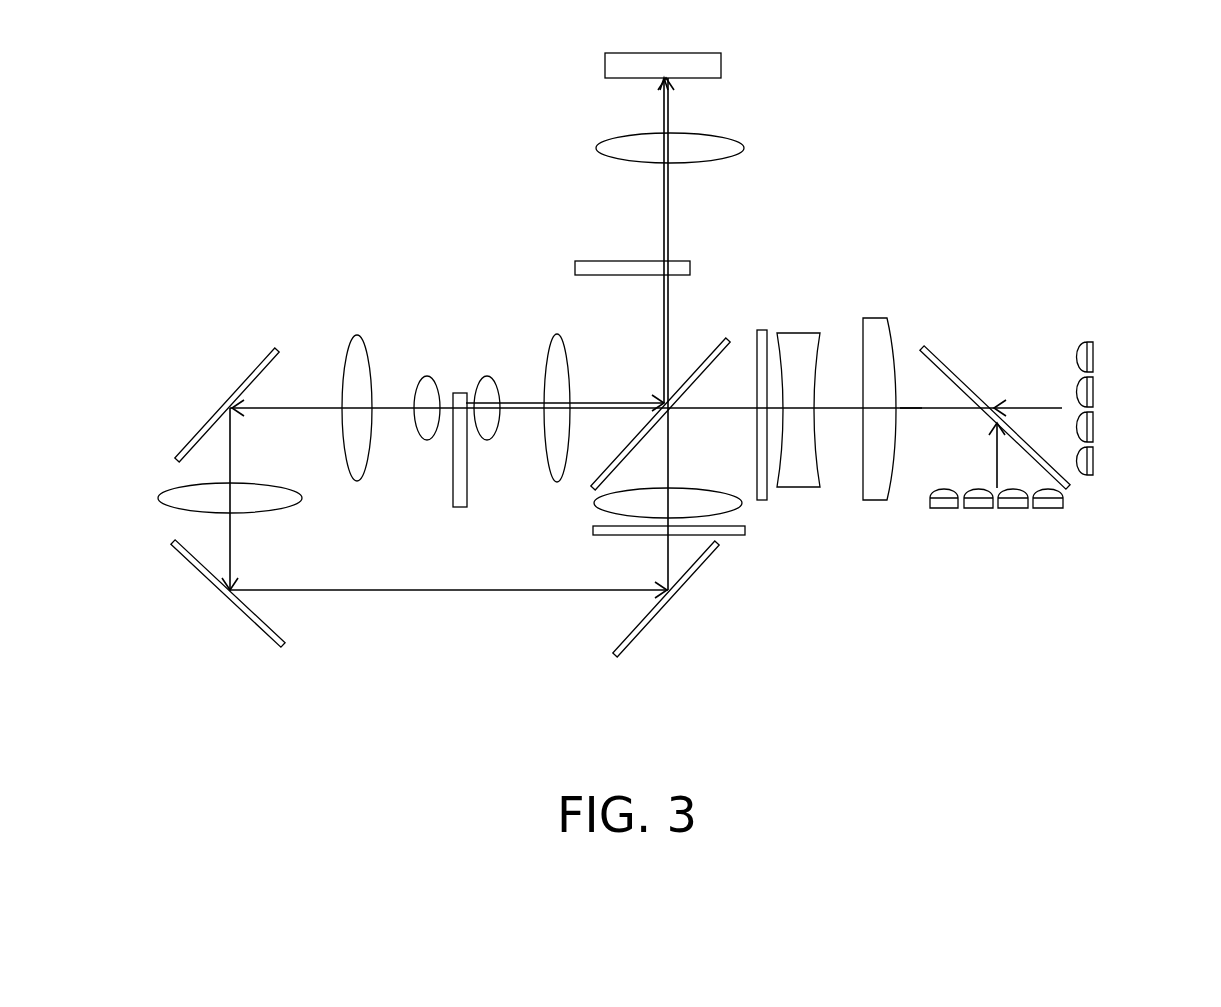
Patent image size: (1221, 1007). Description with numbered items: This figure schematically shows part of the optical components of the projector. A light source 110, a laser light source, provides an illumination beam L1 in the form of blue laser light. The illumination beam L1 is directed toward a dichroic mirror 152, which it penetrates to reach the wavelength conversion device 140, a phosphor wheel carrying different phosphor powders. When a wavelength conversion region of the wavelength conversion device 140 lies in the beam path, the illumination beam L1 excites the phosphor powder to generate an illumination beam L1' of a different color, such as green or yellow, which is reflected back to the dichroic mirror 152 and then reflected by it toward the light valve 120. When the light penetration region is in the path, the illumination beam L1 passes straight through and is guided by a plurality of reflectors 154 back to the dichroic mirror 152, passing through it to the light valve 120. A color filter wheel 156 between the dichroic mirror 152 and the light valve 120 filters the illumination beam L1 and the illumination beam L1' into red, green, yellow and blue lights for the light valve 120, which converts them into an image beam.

The light source 110 is at (1108, 412).
The light valve 120 is at (722, 67).
The wavelength conversion device 140 is at (460, 397).
The dichroic mirror 152 is at (708, 350).
The reflectors 154 is at (257, 368).
The color filter wheel 156 is at (605, 261).
The illumination beam L1 is at (912, 344).
The excited illumination beam L1' is at (565, 359).